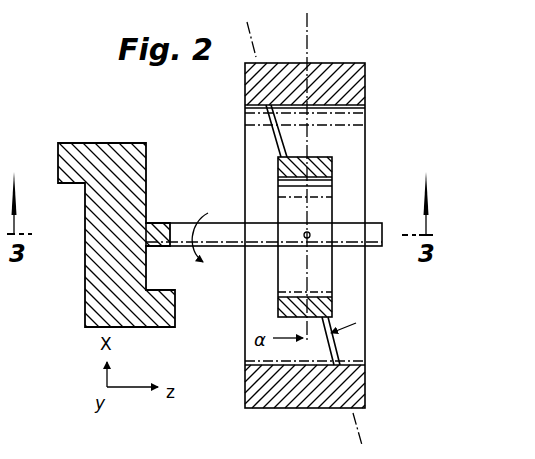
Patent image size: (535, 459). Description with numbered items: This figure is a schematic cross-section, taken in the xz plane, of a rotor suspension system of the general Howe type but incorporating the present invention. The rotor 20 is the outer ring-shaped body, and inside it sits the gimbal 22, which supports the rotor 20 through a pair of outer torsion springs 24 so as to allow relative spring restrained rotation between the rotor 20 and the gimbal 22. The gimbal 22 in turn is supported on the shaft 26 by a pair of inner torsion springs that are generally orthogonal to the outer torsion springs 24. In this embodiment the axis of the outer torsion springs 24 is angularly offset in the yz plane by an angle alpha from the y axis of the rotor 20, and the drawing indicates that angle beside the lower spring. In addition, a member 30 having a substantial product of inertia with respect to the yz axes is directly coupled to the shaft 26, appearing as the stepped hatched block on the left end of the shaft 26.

The rotor 20 is at (338, 72).
The gimbal 22 is at (330, 168).
The outer torsion springs 24 is at (283, 140).
The shaft 26 is at (374, 244).
The member having a substantial product of inertia 30 is at (113, 143).